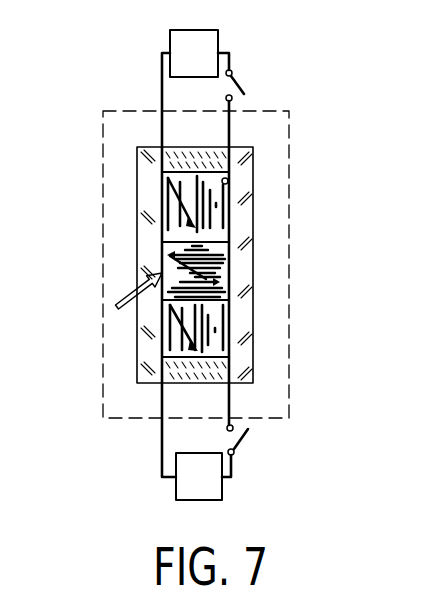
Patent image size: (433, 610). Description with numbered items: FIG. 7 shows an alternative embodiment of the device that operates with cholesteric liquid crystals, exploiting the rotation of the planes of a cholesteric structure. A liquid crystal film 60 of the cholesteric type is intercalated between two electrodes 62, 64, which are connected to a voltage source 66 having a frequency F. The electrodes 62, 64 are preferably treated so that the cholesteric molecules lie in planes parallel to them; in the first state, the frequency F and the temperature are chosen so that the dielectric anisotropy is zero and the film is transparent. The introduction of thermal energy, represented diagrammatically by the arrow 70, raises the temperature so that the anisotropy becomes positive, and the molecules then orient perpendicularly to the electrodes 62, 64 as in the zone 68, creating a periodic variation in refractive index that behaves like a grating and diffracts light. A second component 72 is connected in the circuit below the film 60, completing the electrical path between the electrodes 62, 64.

The liquid crystal film 60 is at (229, 222).
The electrode 62 is at (167, 200).
The electrode 64 is at (228, 185).
The voltage source 66 is at (187, 43).
The zone 68 is at (218, 283).
The arrow 70 is at (117, 307).
The load 72 is at (193, 482).